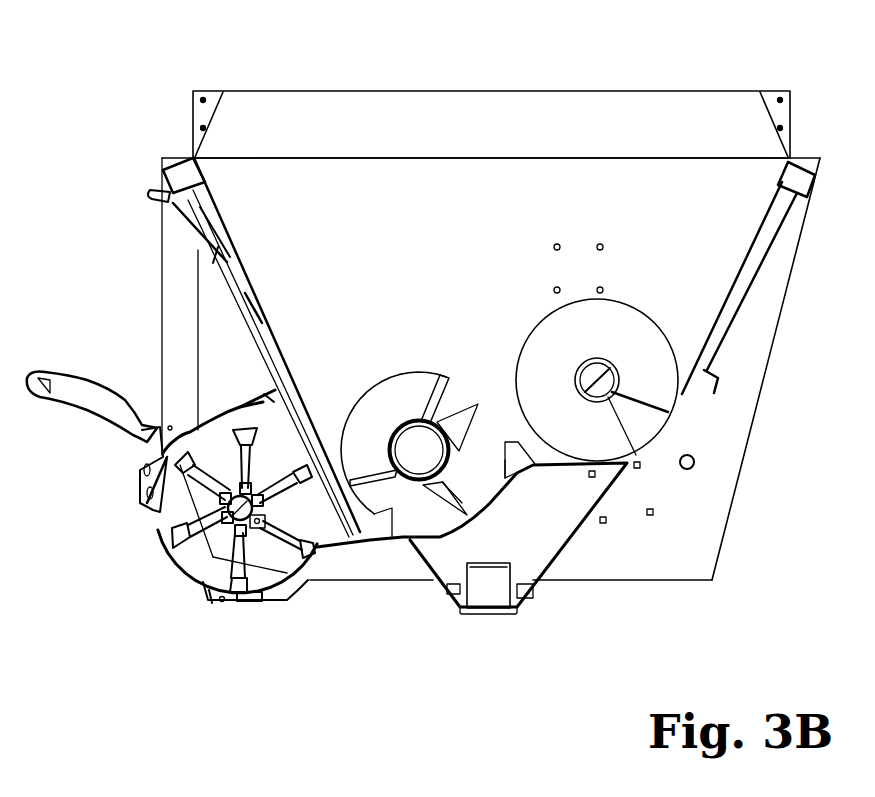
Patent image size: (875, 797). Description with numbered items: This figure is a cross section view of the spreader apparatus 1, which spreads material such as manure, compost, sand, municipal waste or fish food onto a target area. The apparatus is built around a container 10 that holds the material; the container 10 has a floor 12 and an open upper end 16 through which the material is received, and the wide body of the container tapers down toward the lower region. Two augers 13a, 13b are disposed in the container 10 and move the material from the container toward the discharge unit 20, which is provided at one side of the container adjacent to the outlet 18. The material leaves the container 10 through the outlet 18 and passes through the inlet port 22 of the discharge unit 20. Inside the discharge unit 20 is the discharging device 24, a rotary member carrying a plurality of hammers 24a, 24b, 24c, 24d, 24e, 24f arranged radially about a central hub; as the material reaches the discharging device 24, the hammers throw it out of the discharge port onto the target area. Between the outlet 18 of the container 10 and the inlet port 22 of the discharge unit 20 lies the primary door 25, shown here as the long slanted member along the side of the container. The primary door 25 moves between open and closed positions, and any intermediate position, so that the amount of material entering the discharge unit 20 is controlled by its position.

The spreader apparatus 1 is at (432, 65).
The container 10 is at (190, 105).
The floor 12 is at (545, 488).
The auger 13a is at (640, 415).
The auger 13b is at (388, 503).
The open upper end 16 is at (740, 92).
The outlet 18 is at (312, 412).
The discharge unit 20 is at (247, 603).
The inlet port 22 is at (295, 420).
The discharging device 24 is at (150, 516).
The hammer 24a is at (202, 471).
The hammer 24b is at (262, 458).
The hammer 24c is at (293, 486).
The hammer 24d is at (287, 545).
The hammer 24e is at (225, 562).
The hammer 24f is at (197, 527).
The primary door 25 is at (262, 347).